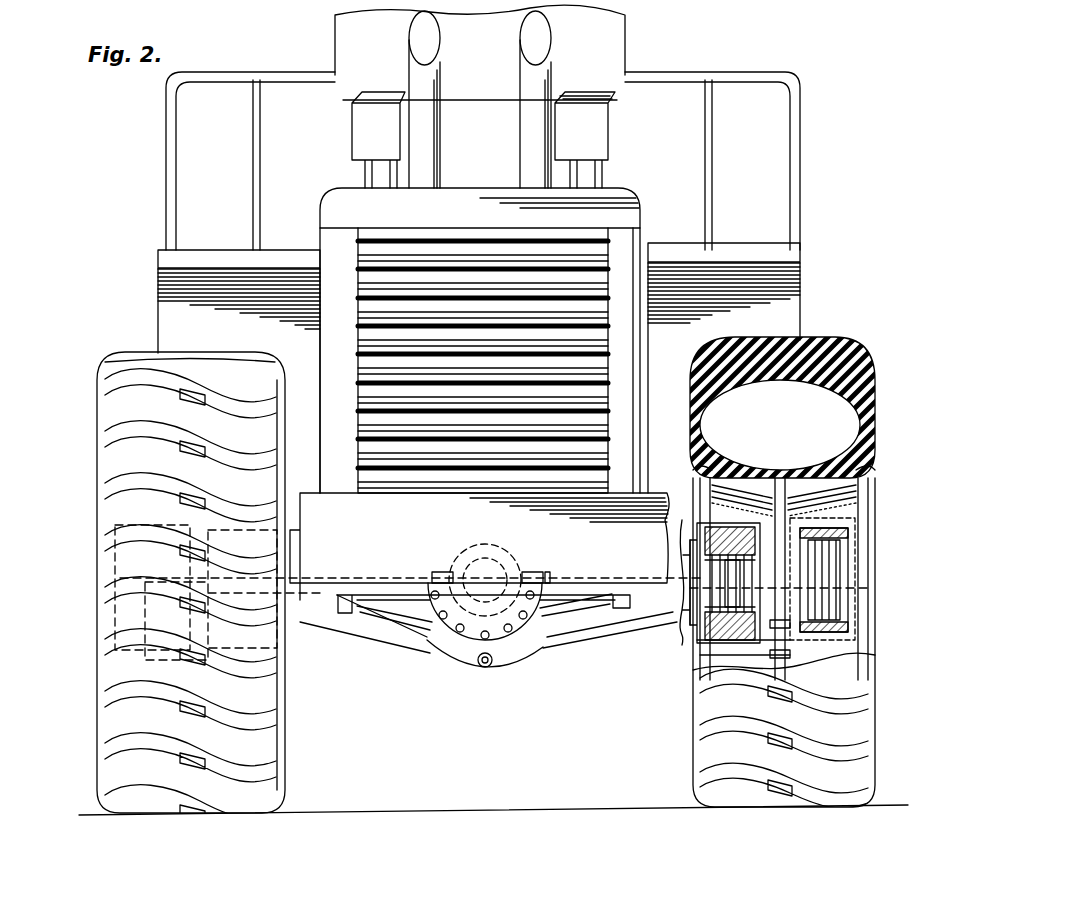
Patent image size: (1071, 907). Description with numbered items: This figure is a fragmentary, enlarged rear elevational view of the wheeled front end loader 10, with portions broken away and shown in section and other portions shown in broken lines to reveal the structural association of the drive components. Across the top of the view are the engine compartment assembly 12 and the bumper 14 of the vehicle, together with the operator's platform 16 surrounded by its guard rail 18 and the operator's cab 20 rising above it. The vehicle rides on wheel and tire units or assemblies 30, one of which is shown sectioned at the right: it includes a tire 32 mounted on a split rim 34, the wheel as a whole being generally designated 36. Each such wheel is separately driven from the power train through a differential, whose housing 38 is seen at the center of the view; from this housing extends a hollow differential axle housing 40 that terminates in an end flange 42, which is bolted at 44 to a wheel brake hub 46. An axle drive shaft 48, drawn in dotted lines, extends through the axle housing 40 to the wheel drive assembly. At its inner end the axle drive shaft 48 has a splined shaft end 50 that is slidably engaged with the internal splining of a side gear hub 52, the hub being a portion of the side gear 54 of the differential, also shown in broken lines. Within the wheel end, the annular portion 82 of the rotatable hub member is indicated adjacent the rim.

The wheeled front end loader 10 is at (753, 54).
The engine compartment assembly 12 is at (640, 196).
The bumper 14 is at (463, 552).
The operator's platform 16 is at (743, 245).
The guard rail 18 is at (800, 118).
The operator's cab 20 is at (628, 37).
The wheel and tire unit 30 is at (870, 382).
The tire 32 is at (838, 343).
The split rim 34 is at (872, 470).
The wheel 36 is at (887, 531).
The differential housing 38 is at (455, 658).
The differential axle housing 40 is at (596, 640).
The end flange 42 is at (697, 600).
The bolts 44 is at (684, 515).
The wheel brake hub 46 is at (672, 628).
The axle drive shaft 48 is at (593, 577).
The splined shaft end 50 is at (547, 578).
The side gear hub 52 is at (520, 572).
The side gear 54 is at (500, 560).
The annular portion 82 is at (833, 522).